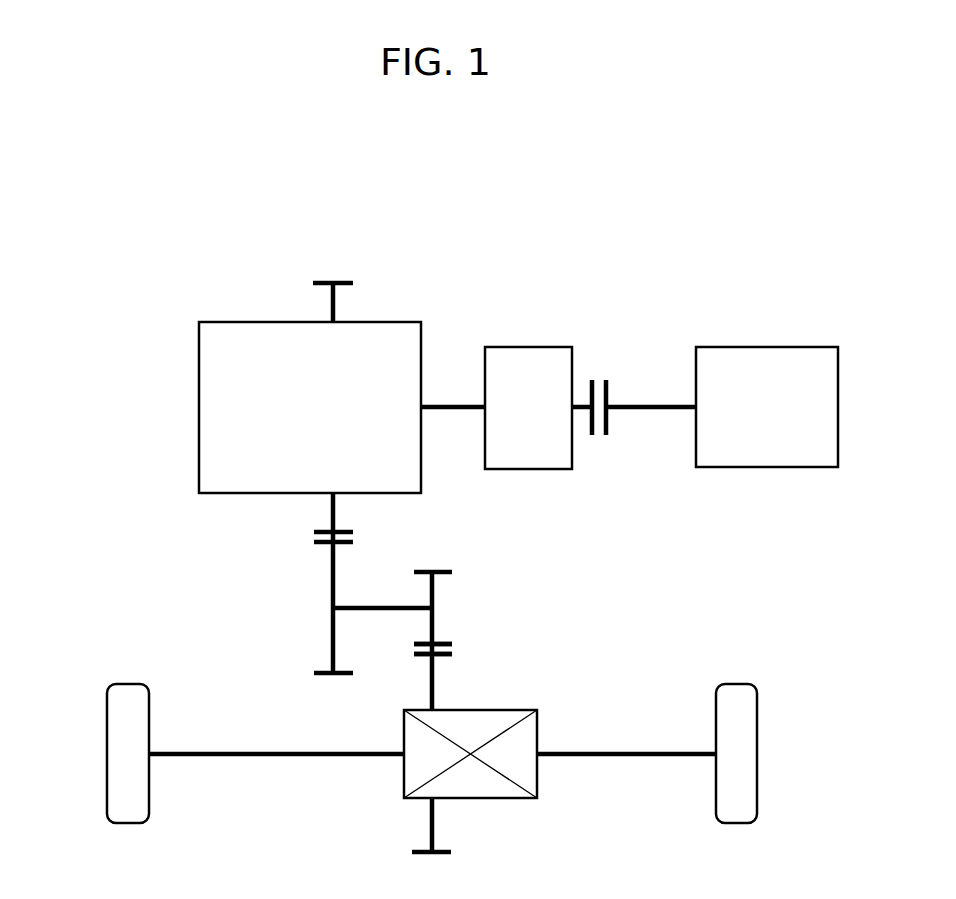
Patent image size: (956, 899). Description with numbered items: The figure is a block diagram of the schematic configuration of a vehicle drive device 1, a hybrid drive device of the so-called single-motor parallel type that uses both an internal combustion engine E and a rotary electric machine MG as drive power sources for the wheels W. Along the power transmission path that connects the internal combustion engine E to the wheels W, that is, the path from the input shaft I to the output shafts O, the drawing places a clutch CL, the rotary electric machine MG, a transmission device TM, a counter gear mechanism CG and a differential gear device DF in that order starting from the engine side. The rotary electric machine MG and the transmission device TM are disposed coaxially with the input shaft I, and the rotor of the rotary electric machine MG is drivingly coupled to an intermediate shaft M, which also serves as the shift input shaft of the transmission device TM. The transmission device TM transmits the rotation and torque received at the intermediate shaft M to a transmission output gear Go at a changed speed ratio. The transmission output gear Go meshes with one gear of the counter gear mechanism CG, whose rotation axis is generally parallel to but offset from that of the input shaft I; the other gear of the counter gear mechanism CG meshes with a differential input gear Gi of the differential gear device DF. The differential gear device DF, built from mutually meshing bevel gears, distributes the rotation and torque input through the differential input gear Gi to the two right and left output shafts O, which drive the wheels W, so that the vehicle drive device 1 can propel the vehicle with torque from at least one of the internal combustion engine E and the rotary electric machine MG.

The vehicle drive device 1 is at (118, 156).
The transmission device TM is at (236, 322).
The transmission output gear Go is at (340, 283).
The intermediate shaft M is at (448, 407).
The rotary electric machine MG is at (530, 347).
The clutch CL is at (601, 378).
The input shaft I is at (660, 407).
The internal combustion engine E is at (767, 467).
The counter gear mechanism CG is at (305, 585).
The differential input gear Gi is at (445, 658).
The differential gear device DF is at (487, 798).
The output shafts O is at (225, 752).
The wheels W is at (131, 690).